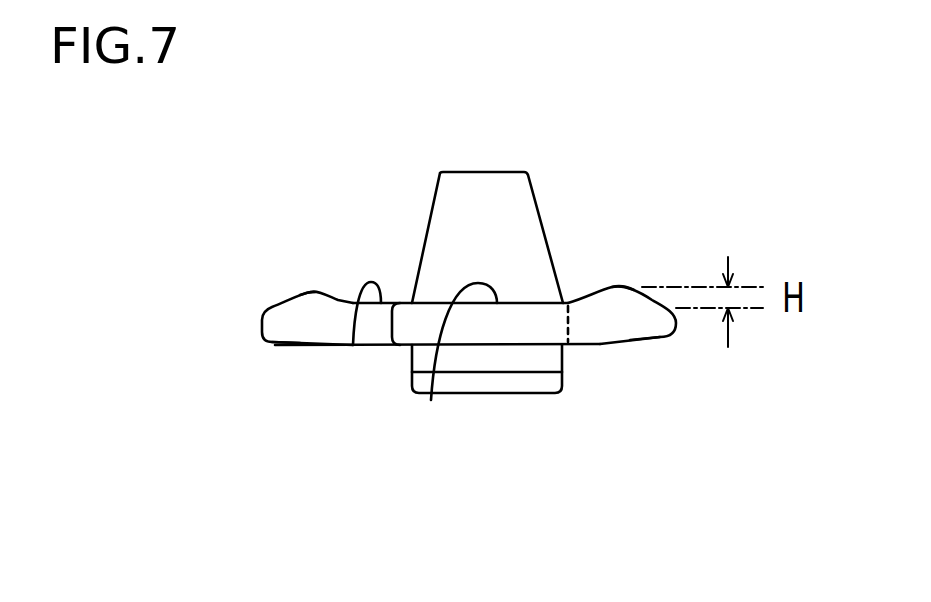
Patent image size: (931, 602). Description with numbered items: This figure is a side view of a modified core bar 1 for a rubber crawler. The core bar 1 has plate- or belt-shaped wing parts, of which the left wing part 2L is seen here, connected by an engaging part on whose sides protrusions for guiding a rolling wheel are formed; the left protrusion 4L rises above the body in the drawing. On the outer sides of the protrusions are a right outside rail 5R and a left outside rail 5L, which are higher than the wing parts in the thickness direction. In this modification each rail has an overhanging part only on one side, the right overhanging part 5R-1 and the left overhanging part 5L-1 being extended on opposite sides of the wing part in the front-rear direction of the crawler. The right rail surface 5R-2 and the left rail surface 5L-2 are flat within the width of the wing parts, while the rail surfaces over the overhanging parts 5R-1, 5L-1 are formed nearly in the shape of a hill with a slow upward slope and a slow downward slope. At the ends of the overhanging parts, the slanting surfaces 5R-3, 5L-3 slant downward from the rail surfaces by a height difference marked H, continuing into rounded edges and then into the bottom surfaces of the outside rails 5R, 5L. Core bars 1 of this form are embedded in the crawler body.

The core bar 1 is at (626, 162).
The protrusion 4L is at (480, 182).
The wing part 2L is at (510, 385).
The right outside rail 5R is at (256, 343).
The overhanging part 5R-1 is at (277, 345).
The rail surface 5R-2 is at (353, 345).
The slanting surface 5R-3 is at (275, 305).
The left outside rail 5L is at (607, 352).
The overhanging part 5L-1 is at (655, 340).
The rail surface 5L-2 is at (431, 400).
The slanting surface 5L-3 is at (647, 298).